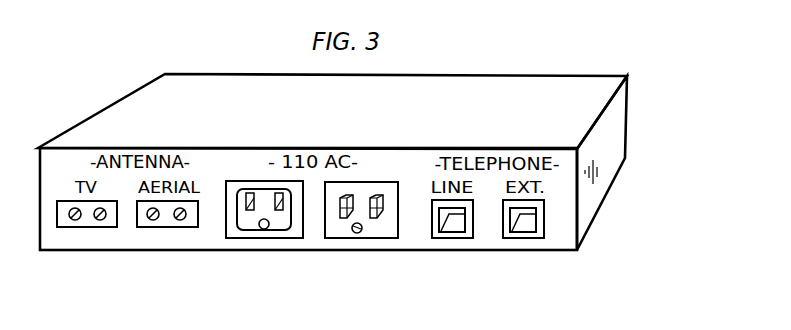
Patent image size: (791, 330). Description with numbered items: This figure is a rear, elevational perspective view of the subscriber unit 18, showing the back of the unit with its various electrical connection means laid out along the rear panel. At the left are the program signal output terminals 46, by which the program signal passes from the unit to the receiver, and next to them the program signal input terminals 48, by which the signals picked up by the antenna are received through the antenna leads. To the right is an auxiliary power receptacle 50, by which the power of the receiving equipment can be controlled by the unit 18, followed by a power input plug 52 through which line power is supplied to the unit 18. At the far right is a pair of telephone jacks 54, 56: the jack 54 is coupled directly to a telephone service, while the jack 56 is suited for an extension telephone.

The subscriber unit 18 is at (554, 90).
The program signal output terminals 46 is at (97, 227).
The program signal input terminals 48 is at (170, 227).
The auxiliary power receptacle 50 is at (277, 229).
The power input plug 52 is at (372, 234).
The telephone jack 54 is at (454, 236).
The telephone jack 56 is at (527, 236).